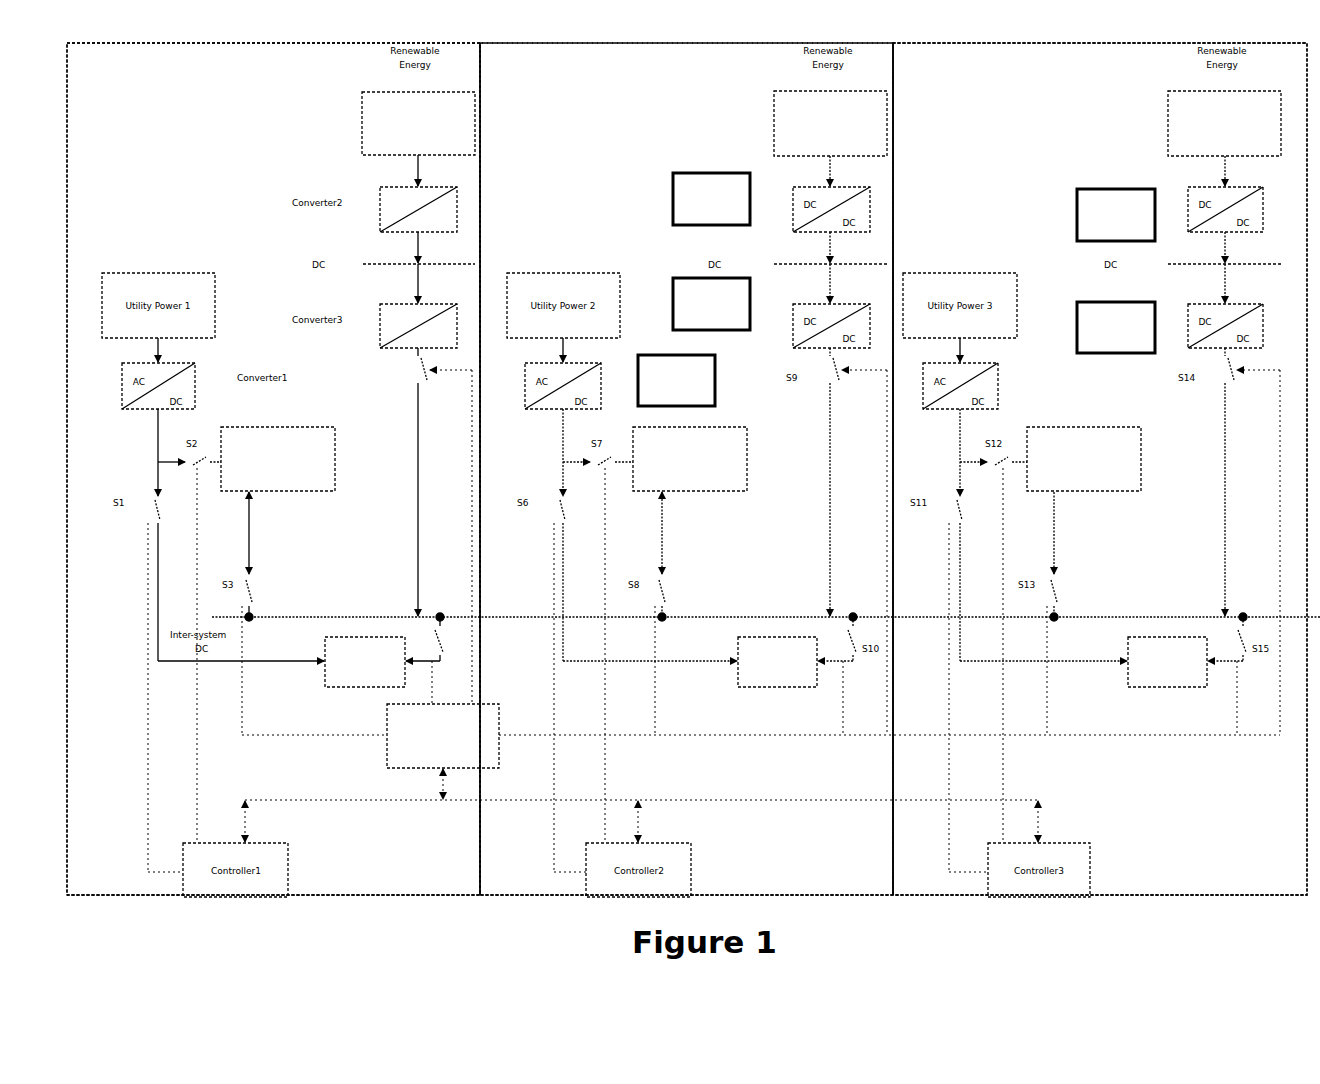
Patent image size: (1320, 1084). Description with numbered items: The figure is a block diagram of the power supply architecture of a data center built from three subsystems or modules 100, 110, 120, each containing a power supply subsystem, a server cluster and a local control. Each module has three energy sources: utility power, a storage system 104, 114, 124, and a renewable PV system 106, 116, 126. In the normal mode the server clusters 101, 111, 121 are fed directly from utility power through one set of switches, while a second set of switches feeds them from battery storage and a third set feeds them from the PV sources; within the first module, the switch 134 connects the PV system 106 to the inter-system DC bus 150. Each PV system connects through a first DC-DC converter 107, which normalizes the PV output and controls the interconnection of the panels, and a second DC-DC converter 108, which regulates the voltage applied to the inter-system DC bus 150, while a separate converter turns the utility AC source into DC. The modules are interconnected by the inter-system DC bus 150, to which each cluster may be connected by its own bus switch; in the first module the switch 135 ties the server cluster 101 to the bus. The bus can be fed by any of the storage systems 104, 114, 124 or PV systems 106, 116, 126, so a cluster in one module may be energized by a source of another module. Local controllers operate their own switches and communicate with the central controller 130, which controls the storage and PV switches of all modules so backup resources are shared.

The data center module 100 is at (120, 78).
The module 110 is at (533, 78).
The module 120 is at (945, 78).
The PV system 106 is at (404, 150).
The PV system 116 is at (816, 150).
The PV system 126 is at (1210, 150).
The first DC-DC converter 107 is at (390, 187).
The second DC-DC converter 108 is at (392, 304).
The switch S4 134 is at (420, 372).
The switch S5 135 is at (442, 647).
The inter-system DC bus 150 is at (335, 617).
The storage system 104 is at (264, 483).
The storage system 114 is at (676, 483).
The storage system 124 is at (1070, 483).
The server cluster 101 is at (351, 683).
The server cluster 111 is at (763, 683).
The server cluster 121 is at (1153, 683).
The central controller 130 is at (428, 762).